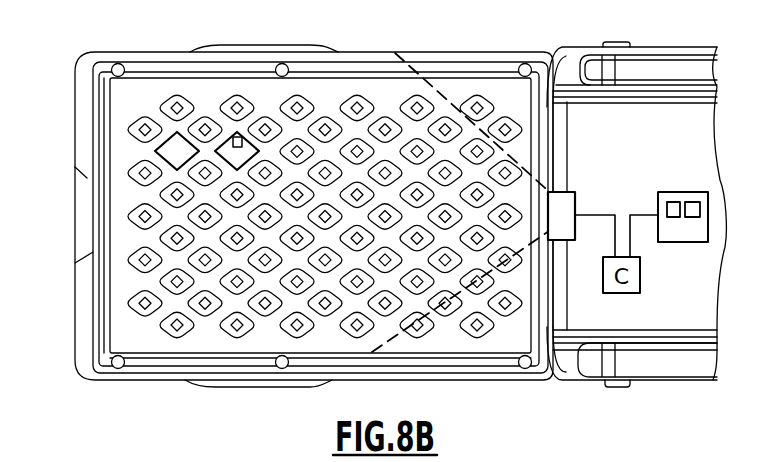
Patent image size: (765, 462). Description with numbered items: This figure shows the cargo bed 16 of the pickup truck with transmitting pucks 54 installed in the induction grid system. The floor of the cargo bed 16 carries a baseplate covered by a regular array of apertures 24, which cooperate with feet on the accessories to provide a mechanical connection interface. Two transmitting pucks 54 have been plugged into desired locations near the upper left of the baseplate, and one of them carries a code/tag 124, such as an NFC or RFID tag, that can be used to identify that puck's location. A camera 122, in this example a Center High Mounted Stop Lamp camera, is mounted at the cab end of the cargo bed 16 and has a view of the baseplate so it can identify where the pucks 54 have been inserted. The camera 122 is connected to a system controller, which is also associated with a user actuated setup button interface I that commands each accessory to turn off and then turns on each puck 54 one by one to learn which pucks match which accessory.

The cargo bed 16 is at (136, 281).
The apertures 24 is at (419, 336).
The transmitting pucks 54 is at (232, 158).
The code/tag 124 is at (241, 138).
The camera 122 is at (575, 193).
The user actuated setup button interface I is at (686, 192).